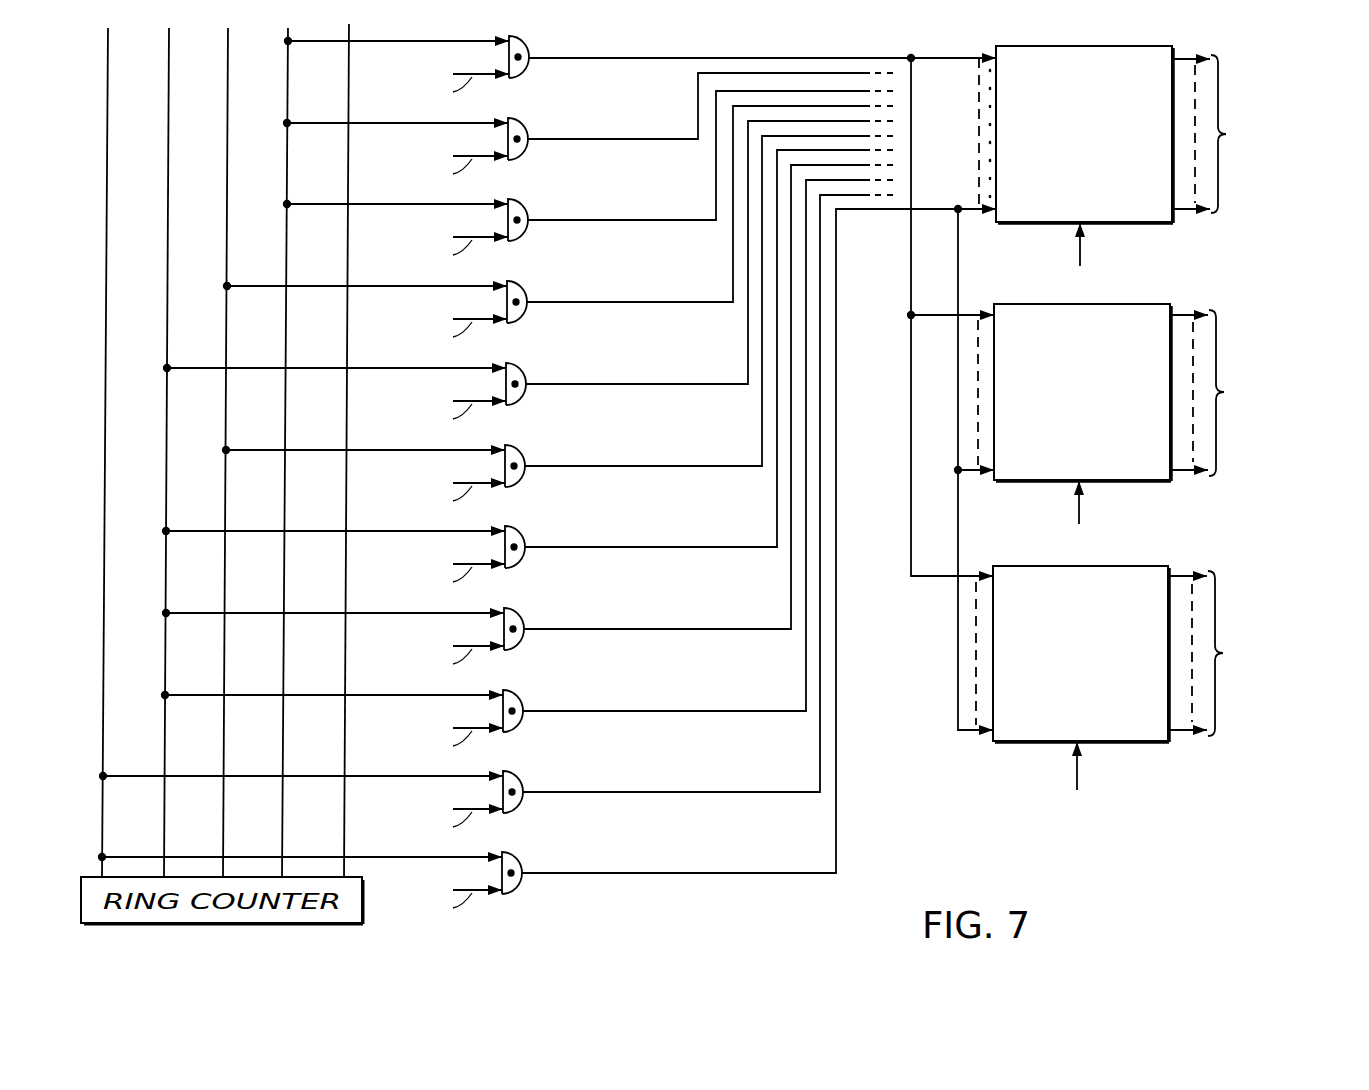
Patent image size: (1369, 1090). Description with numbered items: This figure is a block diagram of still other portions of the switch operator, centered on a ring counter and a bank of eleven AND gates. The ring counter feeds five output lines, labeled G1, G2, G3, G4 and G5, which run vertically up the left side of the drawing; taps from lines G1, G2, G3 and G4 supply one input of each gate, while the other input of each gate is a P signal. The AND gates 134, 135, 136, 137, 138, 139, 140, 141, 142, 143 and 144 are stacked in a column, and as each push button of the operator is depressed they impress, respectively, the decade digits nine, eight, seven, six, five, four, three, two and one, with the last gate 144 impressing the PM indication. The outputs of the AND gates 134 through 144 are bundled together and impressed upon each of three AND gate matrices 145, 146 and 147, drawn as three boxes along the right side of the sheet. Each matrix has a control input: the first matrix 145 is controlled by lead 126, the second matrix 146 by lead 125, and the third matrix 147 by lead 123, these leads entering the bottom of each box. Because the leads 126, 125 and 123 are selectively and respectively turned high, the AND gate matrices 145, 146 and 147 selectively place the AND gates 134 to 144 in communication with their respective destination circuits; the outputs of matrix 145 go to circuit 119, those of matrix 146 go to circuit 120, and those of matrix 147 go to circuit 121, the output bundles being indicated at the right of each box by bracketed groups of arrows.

The ring counter output line G1 is at (103, 828).
The ring counter output line G2 is at (165, 828).
The ring counter output line G3 is at (224, 838).
The ring counter output line G4 is at (283, 840).
The ring counter output line G5 is at (346, 812).
The AND gate 134 is at (525, 72).
The AND gate 135 is at (524, 154).
The AND gate 136 is at (524, 235).
The AND gate 137 is at (523, 317).
The AND gate 138 is at (522, 399).
The AND gate 139 is at (521, 481).
The AND gate 140 is at (521, 562).
The AND gate 141 is at (520, 644).
The AND gate 142 is at (519, 726).
The AND gate 143 is at (519, 807).
The AND gate 144 is at (518, 888).
The AND gate matrix 145 is at (1052, 224).
The AND gate matrix 146 is at (1048, 483).
The AND gate matrix 147 is at (1012, 743).
The lead 126 is at (1153, 247).
The lead 125 is at (1142, 504).
The lead 123 is at (1137, 769).
The circuit 119 is at (1268, 134).
The circuit 120 is at (1264, 393).
The circuit 121 is at (1262, 653).